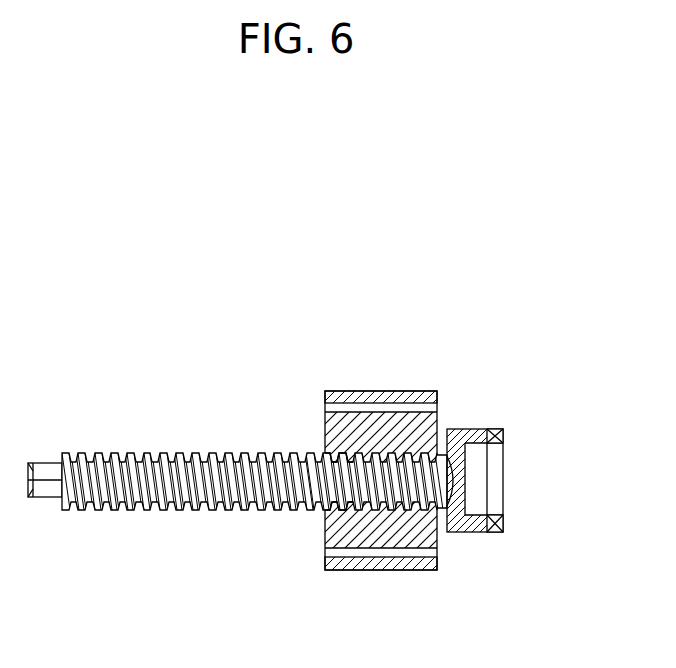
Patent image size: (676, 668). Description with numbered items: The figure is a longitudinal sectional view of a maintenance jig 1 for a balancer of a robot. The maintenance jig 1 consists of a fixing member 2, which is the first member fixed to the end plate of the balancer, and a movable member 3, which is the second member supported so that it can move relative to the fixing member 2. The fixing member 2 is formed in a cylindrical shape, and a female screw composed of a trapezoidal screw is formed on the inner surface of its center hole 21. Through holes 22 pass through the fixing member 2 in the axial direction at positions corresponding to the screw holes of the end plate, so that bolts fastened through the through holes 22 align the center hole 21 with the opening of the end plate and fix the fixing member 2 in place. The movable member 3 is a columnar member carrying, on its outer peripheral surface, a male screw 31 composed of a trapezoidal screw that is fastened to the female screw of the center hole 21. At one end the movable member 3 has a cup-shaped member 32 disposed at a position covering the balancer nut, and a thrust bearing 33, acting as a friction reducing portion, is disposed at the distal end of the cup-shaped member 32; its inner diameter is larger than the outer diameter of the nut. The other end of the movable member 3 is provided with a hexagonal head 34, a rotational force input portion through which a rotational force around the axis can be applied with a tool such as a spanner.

The maintenance jig 1 is at (257, 250).
The fixing member 2 is at (382, 376).
The center hole 21 is at (345, 498).
The through holes 22 is at (423, 407).
The movable member 3 is at (191, 437).
The male screw 31 is at (228, 452).
The cup-shaped member 32 is at (470, 535).
The thrust bearing 33 is at (505, 435).
The hexagonal head 34 is at (42, 462).